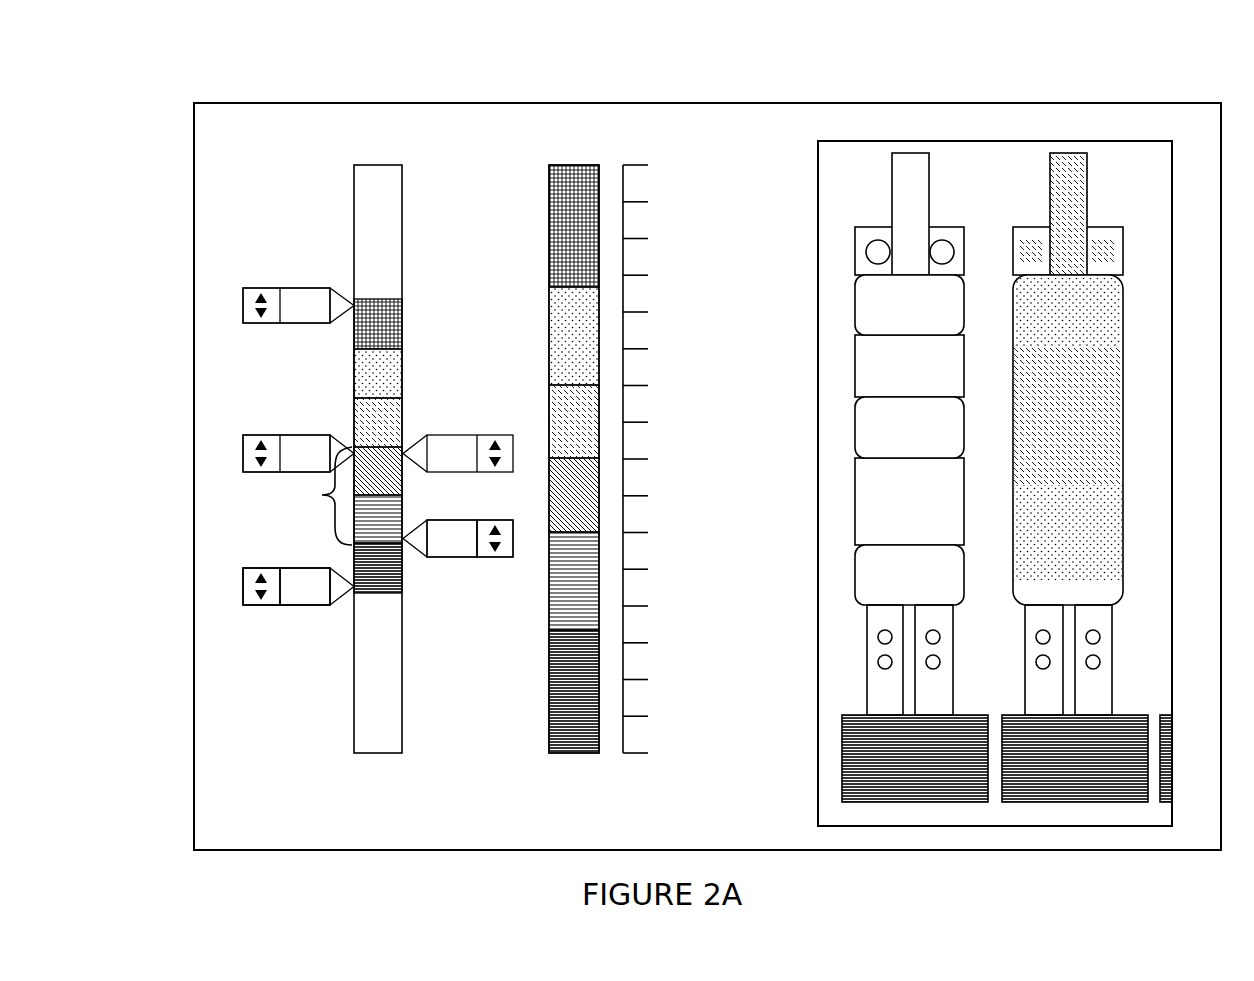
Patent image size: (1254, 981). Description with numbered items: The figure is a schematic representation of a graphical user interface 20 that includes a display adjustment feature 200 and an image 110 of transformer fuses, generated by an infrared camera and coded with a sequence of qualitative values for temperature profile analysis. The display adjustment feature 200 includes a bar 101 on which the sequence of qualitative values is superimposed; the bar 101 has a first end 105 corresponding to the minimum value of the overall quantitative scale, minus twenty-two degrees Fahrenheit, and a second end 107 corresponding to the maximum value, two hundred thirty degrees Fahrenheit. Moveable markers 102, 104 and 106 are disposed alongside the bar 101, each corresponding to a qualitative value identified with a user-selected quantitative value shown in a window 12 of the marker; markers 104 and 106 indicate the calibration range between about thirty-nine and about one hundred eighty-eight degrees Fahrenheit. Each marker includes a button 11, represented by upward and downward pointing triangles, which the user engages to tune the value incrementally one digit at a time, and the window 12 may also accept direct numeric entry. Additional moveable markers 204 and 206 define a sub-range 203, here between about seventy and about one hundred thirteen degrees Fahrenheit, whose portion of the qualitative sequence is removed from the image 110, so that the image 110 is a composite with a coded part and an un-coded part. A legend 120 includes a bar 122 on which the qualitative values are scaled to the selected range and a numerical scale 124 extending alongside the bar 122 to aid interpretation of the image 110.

The graphical user interface 20 is at (304, 87).
The display adjustment feature 200 is at (317, 211).
The bar 101 is at (380, 263).
The second end 107 is at (397, 165).
The first end 105 is at (368, 753).
The moveable marker 106 is at (307, 288).
The moveable marker 102 is at (307, 435).
The moveable marker 104 is at (307, 568).
The moveable marker 204 is at (443, 435).
The moveable marker 206 is at (443, 557).
The button 11 is at (248, 593).
The window 12 is at (307, 597).
The sub-range 203 is at (307, 496).
The bar 122 is at (553, 667).
The legend 120 is at (714, 407).
The numerical scale 124 is at (687, 300).
The image 110 is at (1153, 127).